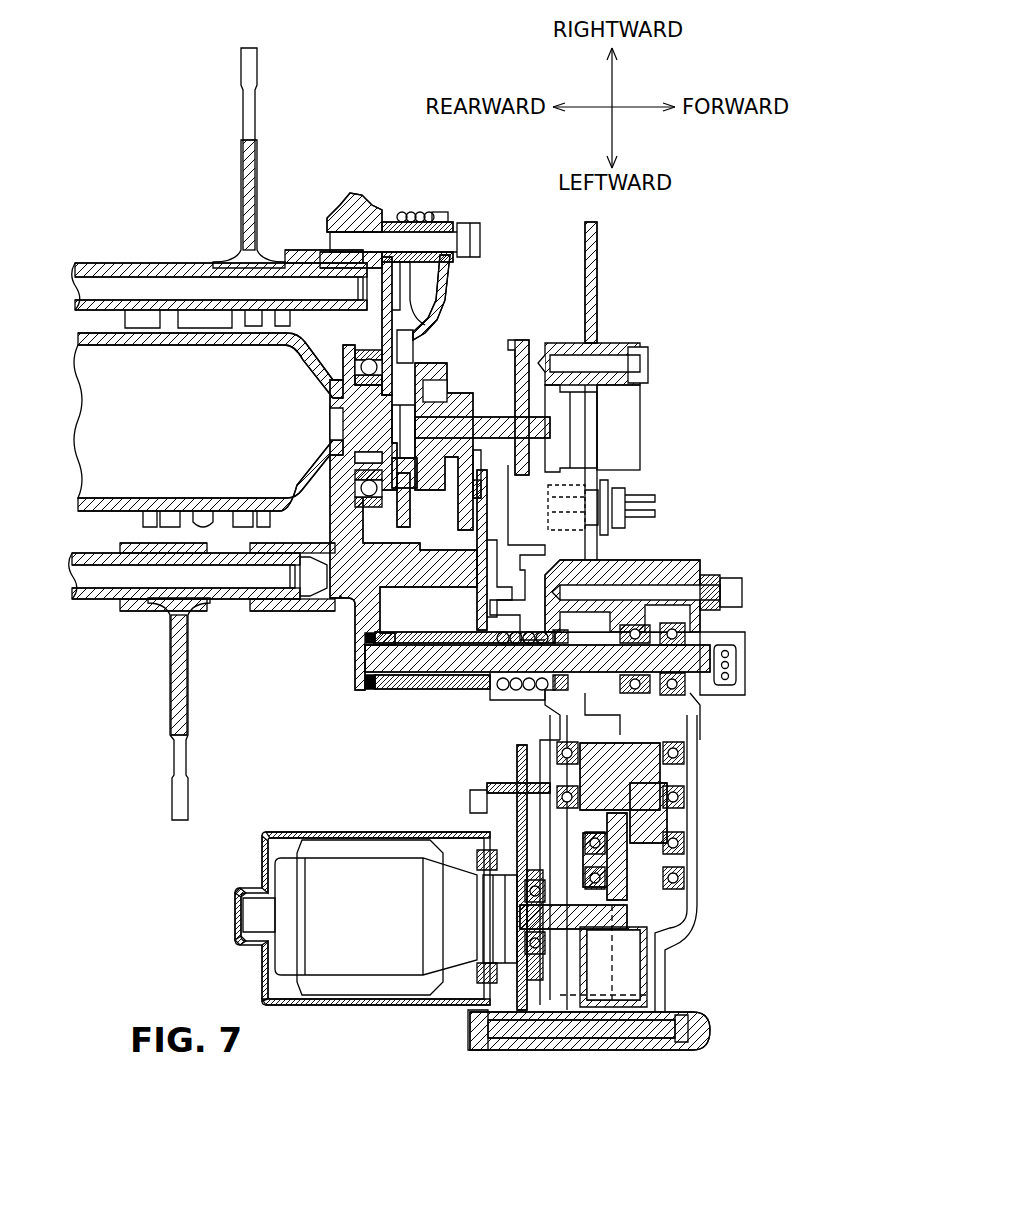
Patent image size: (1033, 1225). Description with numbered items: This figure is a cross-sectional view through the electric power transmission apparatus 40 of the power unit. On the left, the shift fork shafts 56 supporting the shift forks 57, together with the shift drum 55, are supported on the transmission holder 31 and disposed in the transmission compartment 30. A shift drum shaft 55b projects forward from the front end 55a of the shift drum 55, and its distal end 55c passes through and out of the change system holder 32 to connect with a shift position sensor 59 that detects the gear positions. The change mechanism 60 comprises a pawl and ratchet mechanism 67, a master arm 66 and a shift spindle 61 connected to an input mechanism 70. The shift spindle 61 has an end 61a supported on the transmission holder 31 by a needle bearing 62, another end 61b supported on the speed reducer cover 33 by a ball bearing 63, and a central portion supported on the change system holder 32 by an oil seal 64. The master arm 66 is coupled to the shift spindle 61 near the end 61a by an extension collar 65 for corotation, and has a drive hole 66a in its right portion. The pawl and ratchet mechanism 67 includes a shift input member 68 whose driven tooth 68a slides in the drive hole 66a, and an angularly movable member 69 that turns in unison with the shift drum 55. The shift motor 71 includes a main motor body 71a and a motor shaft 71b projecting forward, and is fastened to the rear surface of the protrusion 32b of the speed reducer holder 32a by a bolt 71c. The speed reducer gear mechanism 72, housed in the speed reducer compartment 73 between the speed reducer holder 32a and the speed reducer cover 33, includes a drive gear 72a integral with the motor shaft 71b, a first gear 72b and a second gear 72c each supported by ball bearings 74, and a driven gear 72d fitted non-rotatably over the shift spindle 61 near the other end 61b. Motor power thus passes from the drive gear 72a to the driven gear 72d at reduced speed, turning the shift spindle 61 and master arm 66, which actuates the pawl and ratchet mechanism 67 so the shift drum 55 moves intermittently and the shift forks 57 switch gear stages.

The transmission compartment 30 is at (300, 745).
The transmission holder 31 is at (350, 602).
The change system holder 32 is at (598, 300).
The speed reducer holder 32a is at (517, 752).
The protrusion 32b is at (598, 1052).
The speed reducer cover 33 is at (698, 572).
The electric power transmission apparatus 40 is at (650, 258).
The shift drum 55 is at (122, 432).
The front end 55a is at (352, 452).
The shift drum shaft 55b is at (455, 428).
The distal end 55c is at (548, 425).
The shift fork shaft 56 is at (105, 290).
The shift fork 57 is at (240, 172).
The shift position sensor 59 is at (648, 398).
The change mechanism 60 is at (560, 538).
The shift spindle 61 is at (455, 695).
The end 61a is at (393, 690).
The other end 61b is at (640, 700).
The needle bearing 62 is at (358, 696).
The ball bearing 63 is at (668, 700).
The oil seal 64 is at (548, 688).
The extension collar 65 is at (420, 692).
The master arm 66 is at (486, 578).
The drive hole 66a is at (550, 555).
The pawl and ratchet mechanism 67 is at (472, 385).
The shift input member 68 is at (478, 448).
The driven tooth 68a is at (480, 486).
The angularly movable member 69 is at (410, 476).
The input mechanism 70 is at (665, 973).
The shift motor 71 is at (465, 1058).
The main motor body 71a is at (397, 937).
The motor shaft 71b is at (513, 920).
The bolt 71c is at (512, 1030).
The speed reducer gear mechanism 72 is at (786, 722).
The drive gear 72a is at (627, 883).
The first gear 72b is at (643, 823).
The second gear 72c is at (627, 772).
The driven gear 72d is at (698, 743).
The speed reducer compartment 73 is at (605, 952).
The ball bearing 74 is at (680, 756).